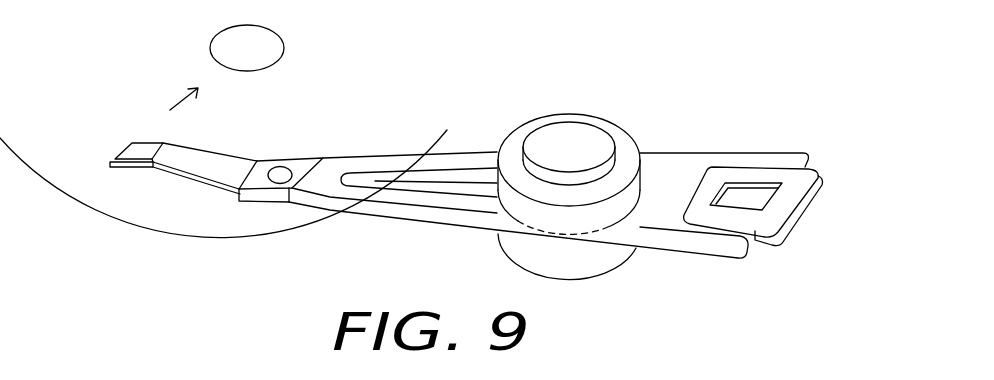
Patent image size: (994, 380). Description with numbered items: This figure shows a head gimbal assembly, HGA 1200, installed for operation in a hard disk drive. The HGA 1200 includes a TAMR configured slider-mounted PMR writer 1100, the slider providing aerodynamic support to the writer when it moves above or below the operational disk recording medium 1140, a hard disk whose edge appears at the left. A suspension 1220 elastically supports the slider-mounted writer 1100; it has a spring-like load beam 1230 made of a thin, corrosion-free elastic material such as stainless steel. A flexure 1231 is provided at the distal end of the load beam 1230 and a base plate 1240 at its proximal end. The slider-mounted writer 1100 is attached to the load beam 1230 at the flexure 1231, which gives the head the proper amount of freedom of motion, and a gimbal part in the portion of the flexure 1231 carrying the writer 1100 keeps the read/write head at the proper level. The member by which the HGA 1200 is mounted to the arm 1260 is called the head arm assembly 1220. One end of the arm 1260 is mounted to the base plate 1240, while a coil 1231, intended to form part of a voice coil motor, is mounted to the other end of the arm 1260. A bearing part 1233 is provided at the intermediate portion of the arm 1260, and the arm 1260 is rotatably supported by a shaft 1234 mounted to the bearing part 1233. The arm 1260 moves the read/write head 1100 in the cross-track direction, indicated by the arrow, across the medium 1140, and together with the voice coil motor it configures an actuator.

The slider-mounted PMR writer 1100 is at (129, 146).
The disk recording medium 1140 is at (108, 218).
The HGA 1200 is at (241, 178).
The suspension 1220 is at (548, 140).
The load beam 1230 is at (240, 163).
The flexure 1231 is at (115, 159).
The bearing part 1233 is at (518, 135).
The shaft 1234 is at (570, 137).
The base plate 1240 is at (310, 158).
The arm 1260 is at (382, 210).